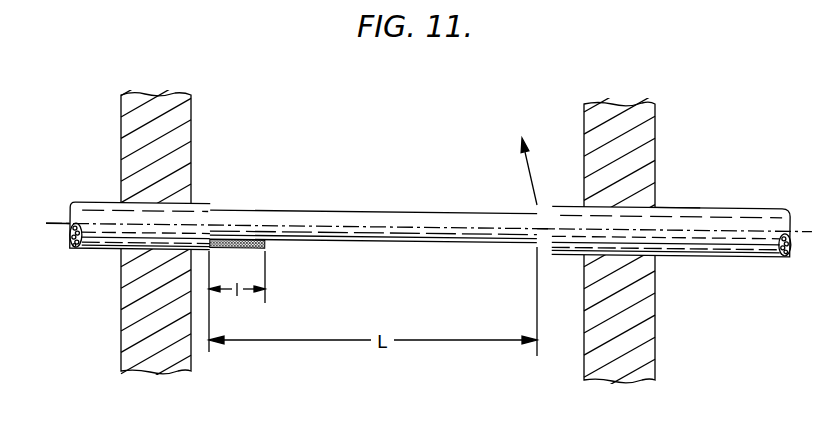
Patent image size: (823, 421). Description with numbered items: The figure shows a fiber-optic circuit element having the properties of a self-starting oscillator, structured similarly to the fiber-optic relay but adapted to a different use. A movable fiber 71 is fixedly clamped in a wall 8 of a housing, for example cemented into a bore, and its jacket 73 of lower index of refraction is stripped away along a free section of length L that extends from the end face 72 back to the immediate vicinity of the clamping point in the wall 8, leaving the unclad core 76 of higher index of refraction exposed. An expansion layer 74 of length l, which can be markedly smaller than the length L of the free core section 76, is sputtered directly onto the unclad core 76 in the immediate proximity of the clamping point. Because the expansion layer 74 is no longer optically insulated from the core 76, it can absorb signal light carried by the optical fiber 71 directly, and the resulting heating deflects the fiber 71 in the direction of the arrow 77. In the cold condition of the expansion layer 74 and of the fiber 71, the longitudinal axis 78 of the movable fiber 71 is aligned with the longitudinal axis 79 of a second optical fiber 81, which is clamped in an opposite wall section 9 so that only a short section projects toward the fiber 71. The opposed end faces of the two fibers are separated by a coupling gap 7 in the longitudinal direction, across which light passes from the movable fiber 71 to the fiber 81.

The coupling gap 7 is at (542, 233).
The wall 8 is at (181, 123).
The wall section 9 is at (642, 128).
The movable fiber 71 is at (366, 199).
The end face 72 is at (542, 219).
The jacket 73 is at (203, 200).
The expansion layer 74 is at (255, 251).
The unclad core 76 is at (414, 211).
The arrow 77 is at (515, 171).
The longitudinal axis 78 is at (55, 220).
The longitudinal axis 79 is at (802, 228).
The optical fiber 81 is at (695, 196).